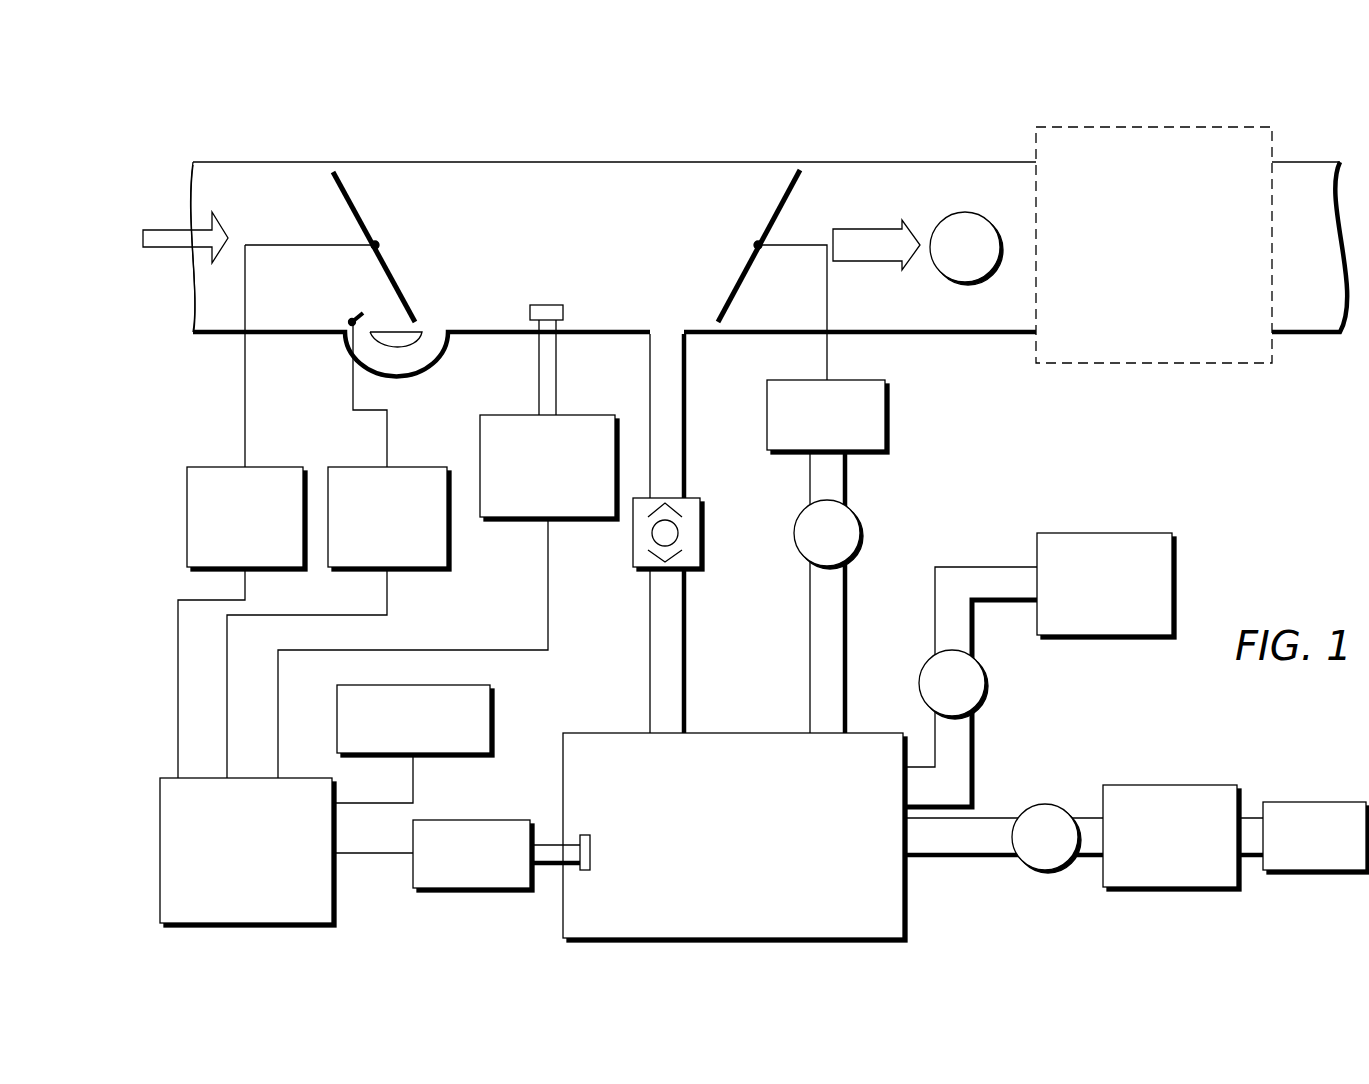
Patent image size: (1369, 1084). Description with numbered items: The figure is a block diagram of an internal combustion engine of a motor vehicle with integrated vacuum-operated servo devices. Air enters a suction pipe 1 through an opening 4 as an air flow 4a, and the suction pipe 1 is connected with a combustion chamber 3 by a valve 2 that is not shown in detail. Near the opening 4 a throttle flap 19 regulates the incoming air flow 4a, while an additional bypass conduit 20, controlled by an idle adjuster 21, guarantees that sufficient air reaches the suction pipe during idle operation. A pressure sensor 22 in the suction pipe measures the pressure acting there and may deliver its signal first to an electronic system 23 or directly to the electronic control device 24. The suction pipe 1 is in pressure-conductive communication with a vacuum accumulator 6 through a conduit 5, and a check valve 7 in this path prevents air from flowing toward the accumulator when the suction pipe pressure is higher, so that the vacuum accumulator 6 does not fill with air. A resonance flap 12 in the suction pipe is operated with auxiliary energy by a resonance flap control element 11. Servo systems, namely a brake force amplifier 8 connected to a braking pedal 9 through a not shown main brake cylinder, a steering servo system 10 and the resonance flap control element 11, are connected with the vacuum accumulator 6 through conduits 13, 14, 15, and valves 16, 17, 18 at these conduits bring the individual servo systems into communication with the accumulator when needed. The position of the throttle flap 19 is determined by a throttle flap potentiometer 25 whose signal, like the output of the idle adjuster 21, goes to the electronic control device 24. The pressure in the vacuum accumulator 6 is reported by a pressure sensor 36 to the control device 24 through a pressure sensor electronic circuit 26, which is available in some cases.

The suction pipe 1 is at (563, 177).
The valve 2 is at (965, 157).
The combustion chamber 3 is at (1138, 343).
The opening 4 is at (180, 180).
The air flow 4a is at (165, 252).
The conduit 5 is at (687, 393).
The vacuum accumulator 6 is at (744, 742).
The check valve 7 is at (702, 530).
The brake force amplifier 8 is at (1187, 783).
The braking pedal 9 is at (1310, 800).
The steering servo system 10 is at (1130, 542).
The resonance flap control element 11 is at (889, 413).
The resonance flap 12 is at (755, 240).
The conduit 13 is at (953, 858).
The conduit 14 is at (1000, 565).
The conduit 15 is at (848, 469).
The valve 16 is at (1050, 872).
The valve 17 is at (976, 683).
The valve 18 is at (850, 535).
The throttle flap 19 is at (356, 196).
The bypass conduit 20 is at (402, 365).
The idle adjuster 21 is at (368, 475).
The pressure sensor 22 is at (546, 302).
The electronic system 23 is at (520, 507).
The electronic control device 24 is at (323, 877).
The throttle flap potentiometer 25 is at (197, 476).
The pressure sensor electronic circuit 26 is at (462, 820).
The pressure sensor 36 is at (583, 834).